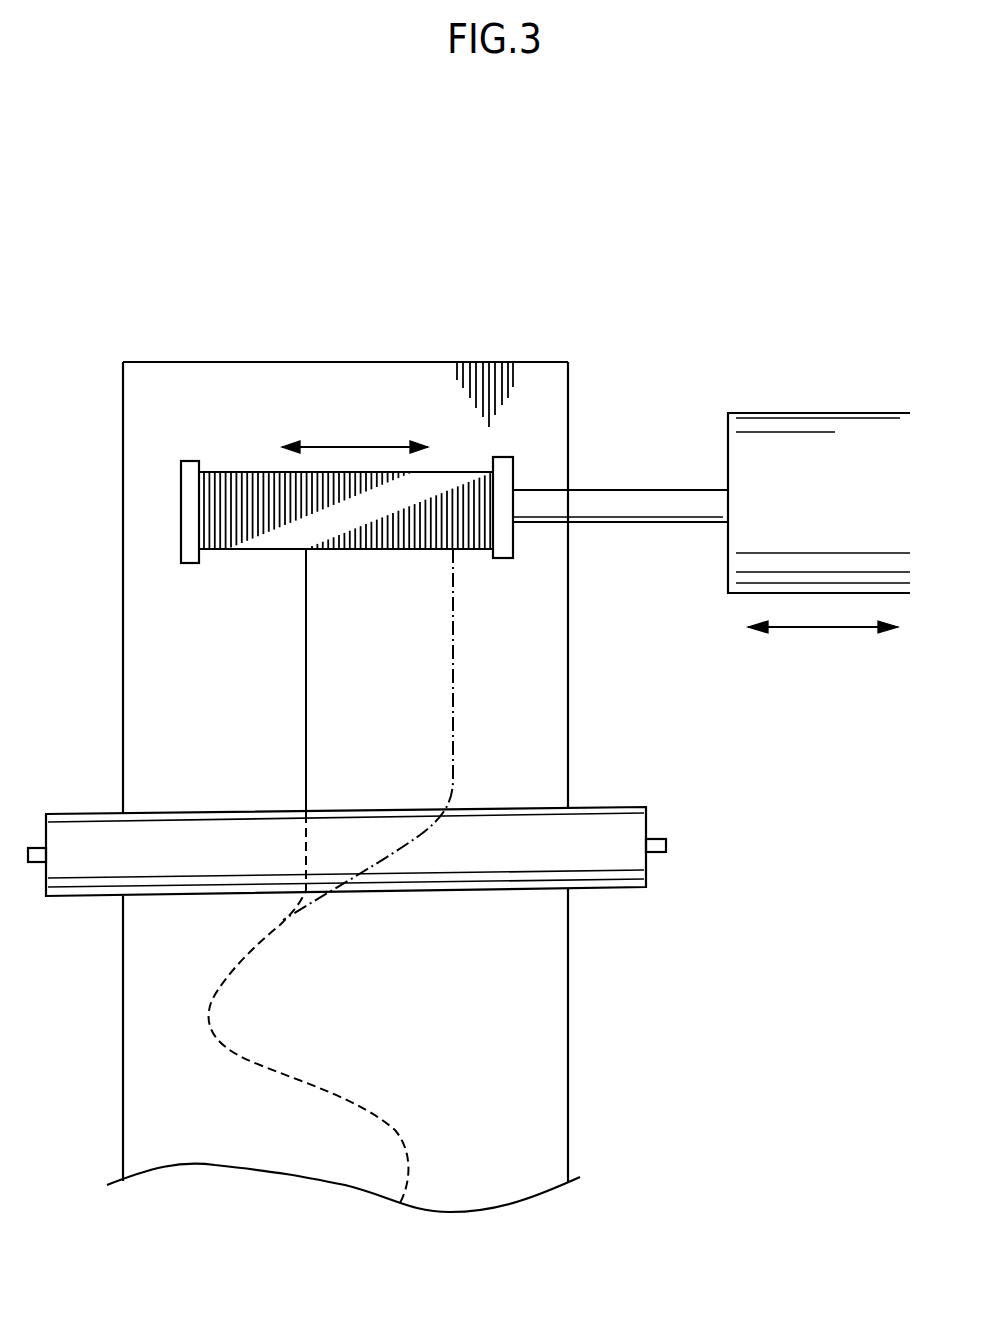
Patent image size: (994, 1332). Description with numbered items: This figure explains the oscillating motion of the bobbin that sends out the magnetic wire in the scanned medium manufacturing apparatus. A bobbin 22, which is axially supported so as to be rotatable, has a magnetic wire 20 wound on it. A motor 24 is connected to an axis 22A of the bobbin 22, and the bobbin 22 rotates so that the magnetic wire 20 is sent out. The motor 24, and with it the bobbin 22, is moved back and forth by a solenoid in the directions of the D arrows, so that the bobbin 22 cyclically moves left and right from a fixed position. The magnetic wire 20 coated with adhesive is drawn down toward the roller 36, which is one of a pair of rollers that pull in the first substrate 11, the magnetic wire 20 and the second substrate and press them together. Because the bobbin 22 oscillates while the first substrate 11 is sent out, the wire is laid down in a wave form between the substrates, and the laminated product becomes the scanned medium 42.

The first substrate 11 is at (569, 712).
The magnetic wire 20 is at (304, 632).
The bobbin 22 is at (188, 467).
The axis 22A is at (650, 504).
The motor 24 is at (833, 428).
The roller 36 is at (612, 878).
The scanned medium 42 is at (580, 1072).
The D arrow D is at (353, 447).